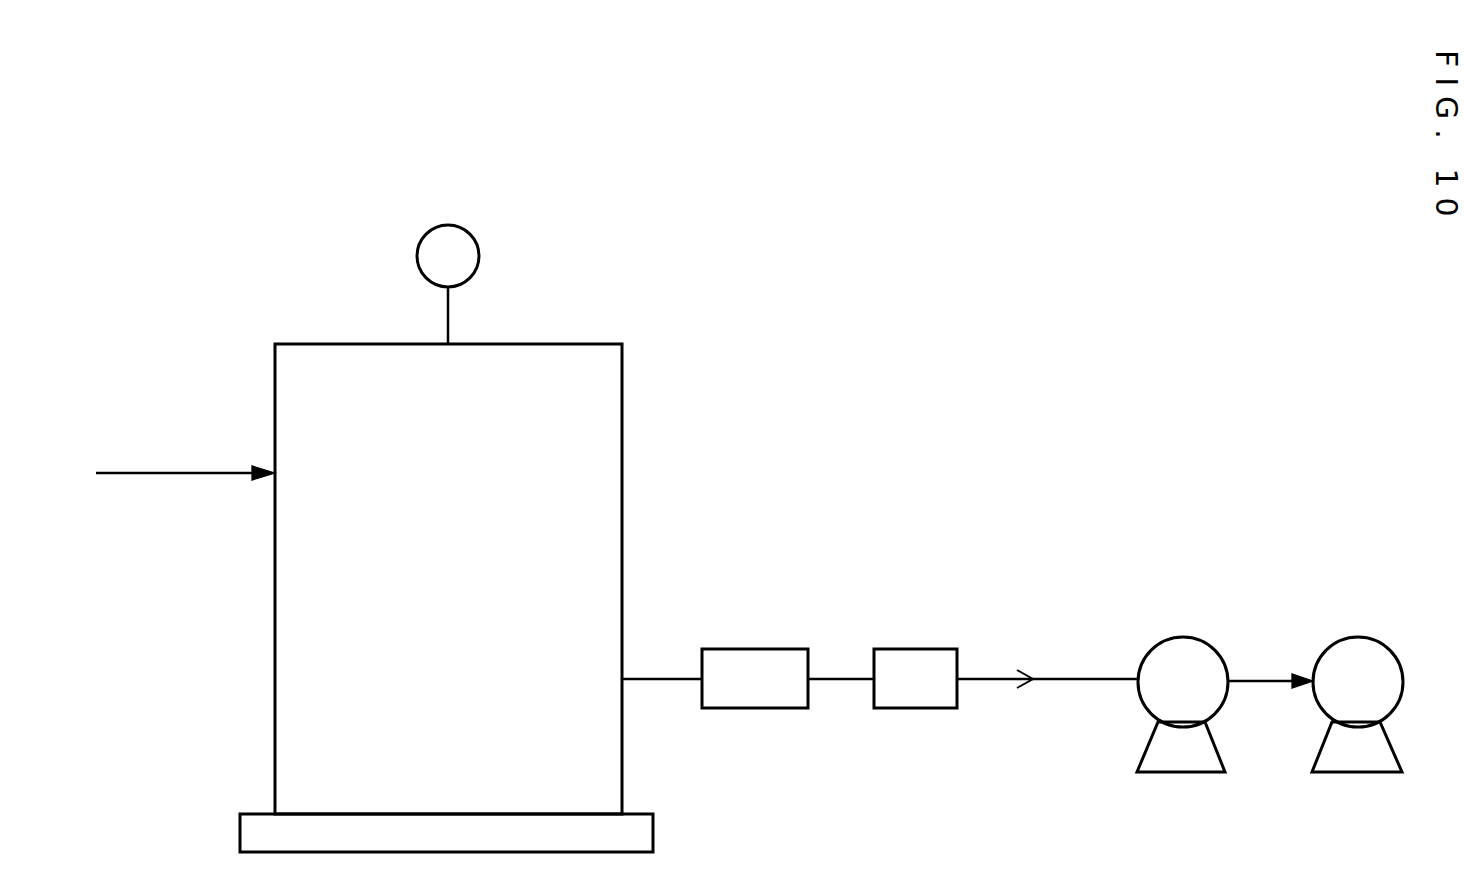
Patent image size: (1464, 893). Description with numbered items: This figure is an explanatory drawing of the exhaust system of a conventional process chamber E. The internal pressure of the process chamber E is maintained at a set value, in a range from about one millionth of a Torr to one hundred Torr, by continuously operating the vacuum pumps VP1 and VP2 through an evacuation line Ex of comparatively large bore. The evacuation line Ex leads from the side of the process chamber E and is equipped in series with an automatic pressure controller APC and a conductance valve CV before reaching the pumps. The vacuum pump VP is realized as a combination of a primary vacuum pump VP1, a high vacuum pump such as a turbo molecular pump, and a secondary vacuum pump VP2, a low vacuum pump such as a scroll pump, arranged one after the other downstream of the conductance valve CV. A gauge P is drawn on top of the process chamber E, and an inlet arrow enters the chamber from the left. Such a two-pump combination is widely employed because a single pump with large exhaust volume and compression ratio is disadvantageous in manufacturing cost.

The process chamber E is at (622, 445).
The pressure gauge P is at (448, 284).
The evacuation line Ex is at (835, 678).
The automatic pressure controller APC is at (755, 678).
The conductance valve CV is at (915, 678).
The vacuum pump VP is at (1270, 655).
The primary vacuum pump VP1 is at (1182, 704).
The secondary vacuum pump VP2 is at (1357, 704).